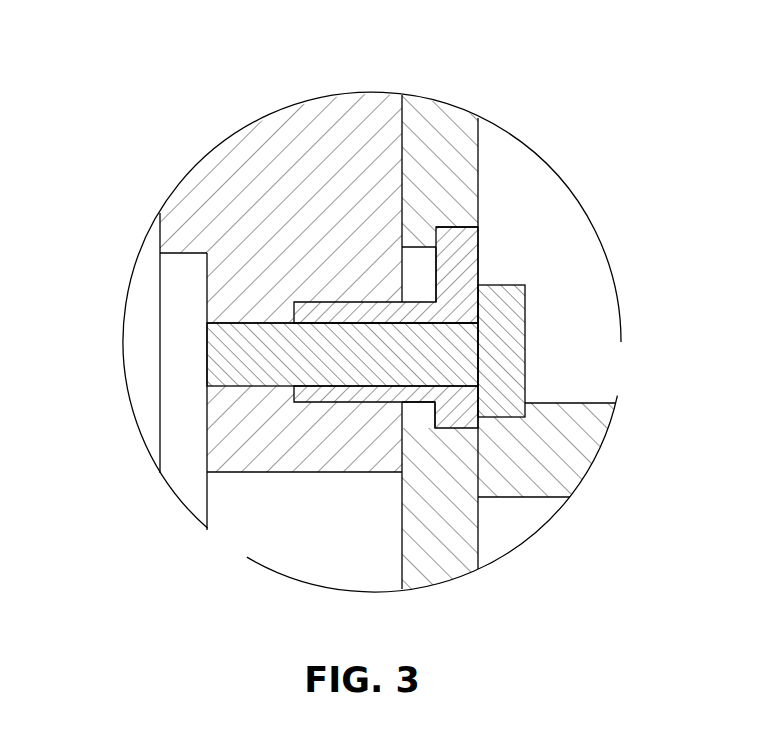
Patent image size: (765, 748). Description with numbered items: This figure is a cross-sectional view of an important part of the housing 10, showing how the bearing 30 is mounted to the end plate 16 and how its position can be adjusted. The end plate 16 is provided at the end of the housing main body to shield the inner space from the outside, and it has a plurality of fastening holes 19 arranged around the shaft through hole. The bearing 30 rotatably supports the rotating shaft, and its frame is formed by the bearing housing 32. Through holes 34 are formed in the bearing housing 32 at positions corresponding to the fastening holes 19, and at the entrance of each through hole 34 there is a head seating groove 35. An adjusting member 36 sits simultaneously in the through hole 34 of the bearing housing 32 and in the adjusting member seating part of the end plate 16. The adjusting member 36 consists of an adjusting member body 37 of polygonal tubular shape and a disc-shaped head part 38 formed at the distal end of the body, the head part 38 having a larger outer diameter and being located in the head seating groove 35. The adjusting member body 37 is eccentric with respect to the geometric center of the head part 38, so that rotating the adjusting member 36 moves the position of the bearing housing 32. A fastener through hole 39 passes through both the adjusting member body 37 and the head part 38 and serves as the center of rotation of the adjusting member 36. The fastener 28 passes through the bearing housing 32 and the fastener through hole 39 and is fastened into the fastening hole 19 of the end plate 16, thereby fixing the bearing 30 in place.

The housing 10 is at (218, 118).
The end plate 16 is at (203, 185).
The fastening hole 19 is at (230, 325).
The fastener 28 is at (513, 352).
The bearing 30 is at (485, 202).
The bearing housing 32 is at (477, 150).
The through hole 34 is at (420, 248).
The head seating groove 35 is at (483, 408).
The adjusting member 36 is at (470, 412).
The adjusting member body 37 is at (310, 318).
The head part 38 is at (463, 298).
The fastener through hole 39 is at (327, 328).